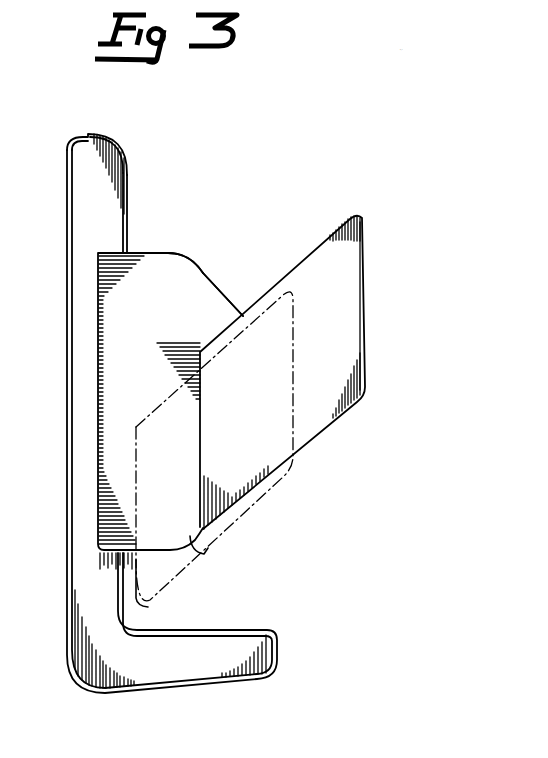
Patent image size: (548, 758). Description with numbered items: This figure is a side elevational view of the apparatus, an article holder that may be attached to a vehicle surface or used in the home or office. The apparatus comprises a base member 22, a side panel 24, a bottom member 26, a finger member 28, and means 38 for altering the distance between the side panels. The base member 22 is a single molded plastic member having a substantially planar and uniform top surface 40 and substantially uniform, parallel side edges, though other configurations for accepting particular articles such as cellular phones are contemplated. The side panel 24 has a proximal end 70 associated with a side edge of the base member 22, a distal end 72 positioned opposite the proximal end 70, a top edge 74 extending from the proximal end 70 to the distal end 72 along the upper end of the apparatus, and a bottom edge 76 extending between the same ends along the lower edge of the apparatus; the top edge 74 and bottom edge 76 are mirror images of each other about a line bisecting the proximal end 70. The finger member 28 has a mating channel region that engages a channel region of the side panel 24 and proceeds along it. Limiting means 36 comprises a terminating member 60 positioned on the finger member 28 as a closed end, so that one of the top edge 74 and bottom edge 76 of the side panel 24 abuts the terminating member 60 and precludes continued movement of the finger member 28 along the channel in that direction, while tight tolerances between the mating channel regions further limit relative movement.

The base member 22 is at (127, 185).
The side panel 24 is at (205, 275).
The bottom member 26 is at (243, 630).
The finger member 28 is at (365, 316).
The limiting means 36 is at (193, 540).
The means for altering the distance between the side panels 38 is at (97, 361).
The top surface 40 is at (128, 228).
The terminating member 60 is at (207, 538).
The proximal end 70 is at (97, 433).
The distal end 72 is at (242, 315).
The top edge 74 is at (182, 253).
The bottom edge 76 is at (132, 575).